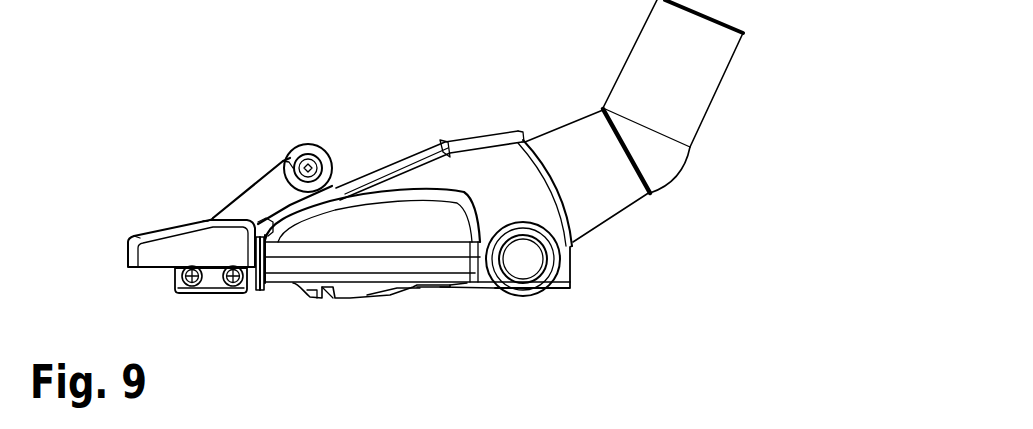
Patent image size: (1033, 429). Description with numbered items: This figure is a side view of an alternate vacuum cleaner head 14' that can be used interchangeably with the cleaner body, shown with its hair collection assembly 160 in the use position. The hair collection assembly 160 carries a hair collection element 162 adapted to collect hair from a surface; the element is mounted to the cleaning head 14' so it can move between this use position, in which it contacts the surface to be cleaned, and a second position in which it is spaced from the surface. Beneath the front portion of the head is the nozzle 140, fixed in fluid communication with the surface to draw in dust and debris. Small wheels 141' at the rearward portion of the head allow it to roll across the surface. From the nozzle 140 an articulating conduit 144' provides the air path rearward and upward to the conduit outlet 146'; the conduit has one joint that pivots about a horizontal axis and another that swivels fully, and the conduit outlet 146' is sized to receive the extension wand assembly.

The vacuum cleaner head 14' is at (333, 146).
The hair collection assembly 160 is at (188, 246).
The hair collection element 162 is at (213, 283).
The nozzle 140 is at (330, 298).
The small wheels 141' is at (536, 293).
The articulating conduit 144' is at (614, 184).
The conduit outlet 146' is at (723, 96).